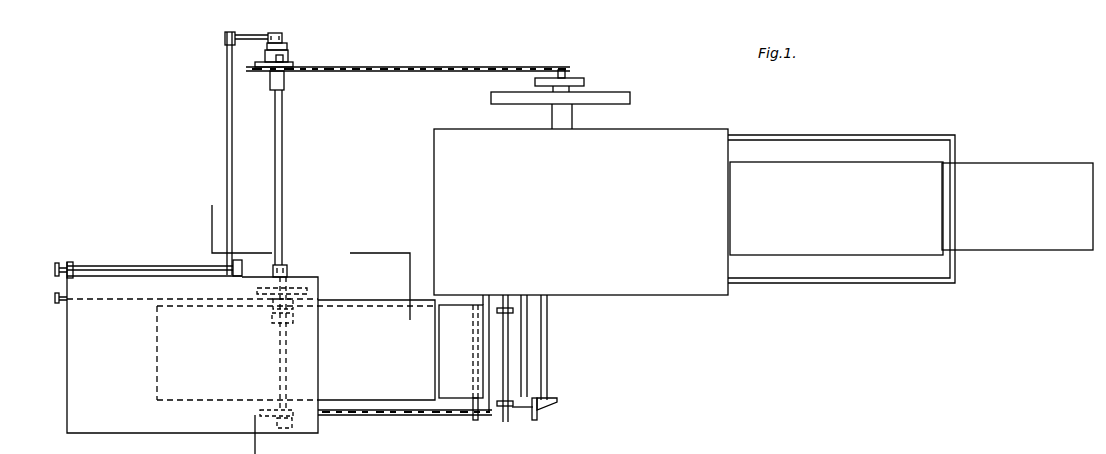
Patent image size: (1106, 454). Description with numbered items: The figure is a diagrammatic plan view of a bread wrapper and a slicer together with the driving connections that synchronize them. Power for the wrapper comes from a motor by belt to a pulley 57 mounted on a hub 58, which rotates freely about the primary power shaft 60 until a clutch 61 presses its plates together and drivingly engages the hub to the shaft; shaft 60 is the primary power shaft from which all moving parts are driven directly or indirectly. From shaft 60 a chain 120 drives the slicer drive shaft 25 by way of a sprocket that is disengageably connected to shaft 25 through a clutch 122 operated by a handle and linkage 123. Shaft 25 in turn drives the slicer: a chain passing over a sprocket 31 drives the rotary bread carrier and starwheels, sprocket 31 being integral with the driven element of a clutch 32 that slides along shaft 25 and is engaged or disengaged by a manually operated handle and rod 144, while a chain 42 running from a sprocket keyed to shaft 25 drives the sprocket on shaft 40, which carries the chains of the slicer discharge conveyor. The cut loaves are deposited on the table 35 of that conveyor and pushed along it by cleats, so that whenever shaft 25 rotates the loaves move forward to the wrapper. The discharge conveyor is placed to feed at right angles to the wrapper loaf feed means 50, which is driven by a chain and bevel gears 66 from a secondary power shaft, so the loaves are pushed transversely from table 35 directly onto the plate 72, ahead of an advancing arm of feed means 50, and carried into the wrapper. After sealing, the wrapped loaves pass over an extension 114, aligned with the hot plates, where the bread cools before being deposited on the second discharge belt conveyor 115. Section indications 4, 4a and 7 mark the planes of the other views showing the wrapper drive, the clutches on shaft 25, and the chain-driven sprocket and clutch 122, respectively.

The section line 4- 4 is at (208, 70).
The section line 7- 7 is at (277, 33).
The section line 4a is at (253, 288).
The drive shaft 25 is at (283, 200).
The sprocket 31 is at (293, 287).
The clutch 32 is at (296, 303).
The table 35 is at (462, 387).
The shaft 40 is at (477, 420).
The chain 42 is at (376, 417).
The loaf feed means 50 is at (509, 388).
The pulley 57 is at (630, 97).
The hub 58 is at (565, 117).
The shaft 60 is at (563, 73).
The clutch 61 is at (585, 83).
The bevel gears 66 is at (558, 400).
The plate 72 is at (518, 348).
The extension 114 is at (836, 208).
The second discharge belt conveyor 115 is at (1017, 206).
The chain 120 is at (392, 72).
The clutch 122 is at (290, 58).
The handle and linkage 123 is at (226, 162).
The handle and rod 144 is at (58, 305).